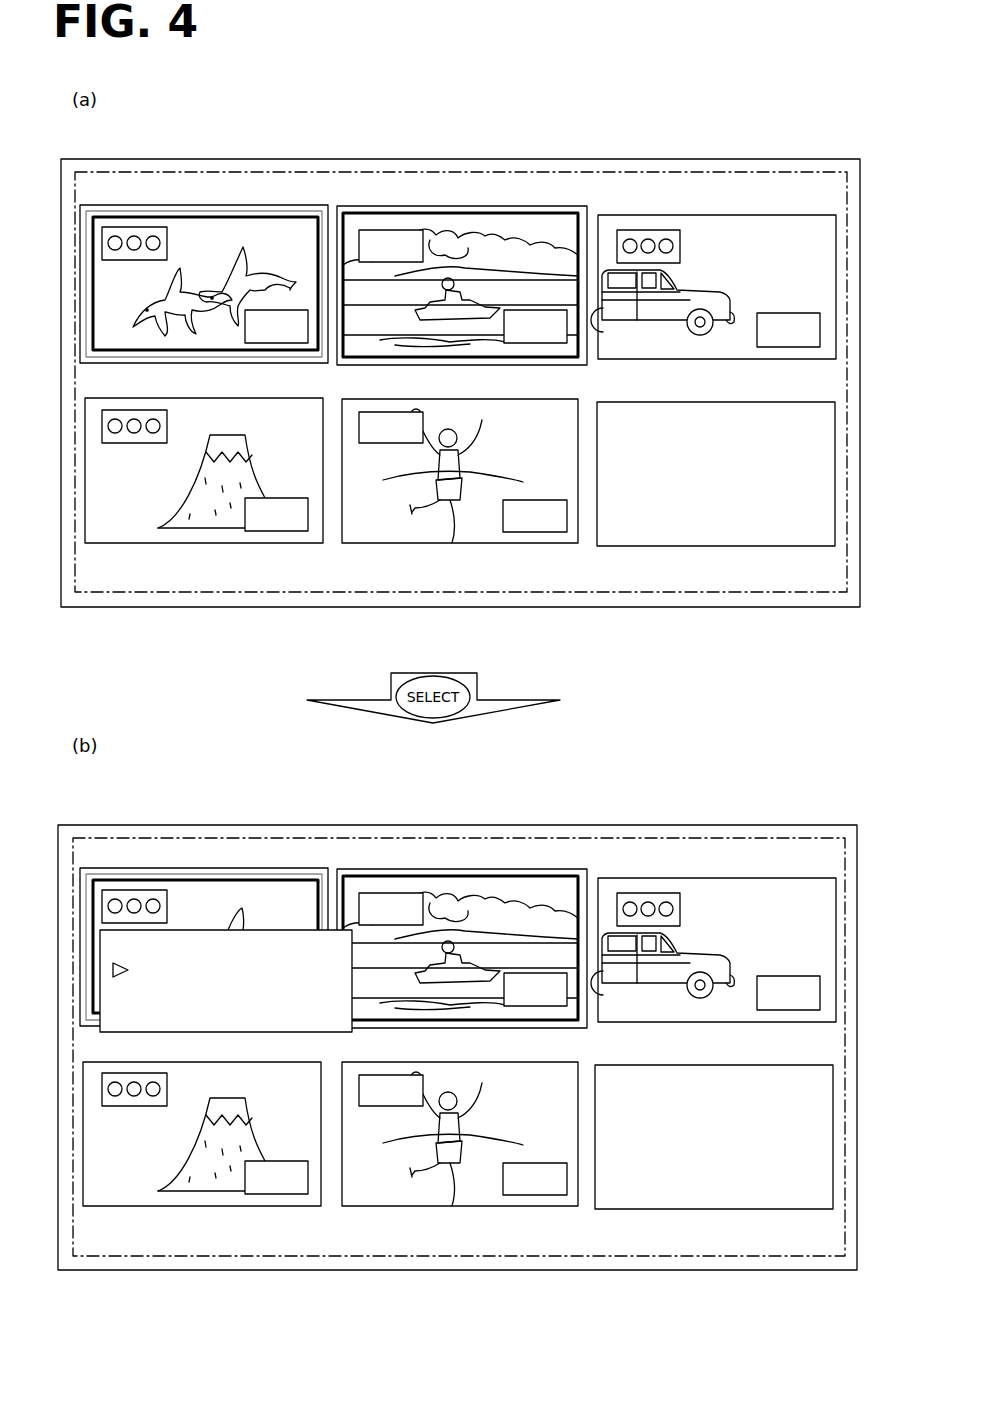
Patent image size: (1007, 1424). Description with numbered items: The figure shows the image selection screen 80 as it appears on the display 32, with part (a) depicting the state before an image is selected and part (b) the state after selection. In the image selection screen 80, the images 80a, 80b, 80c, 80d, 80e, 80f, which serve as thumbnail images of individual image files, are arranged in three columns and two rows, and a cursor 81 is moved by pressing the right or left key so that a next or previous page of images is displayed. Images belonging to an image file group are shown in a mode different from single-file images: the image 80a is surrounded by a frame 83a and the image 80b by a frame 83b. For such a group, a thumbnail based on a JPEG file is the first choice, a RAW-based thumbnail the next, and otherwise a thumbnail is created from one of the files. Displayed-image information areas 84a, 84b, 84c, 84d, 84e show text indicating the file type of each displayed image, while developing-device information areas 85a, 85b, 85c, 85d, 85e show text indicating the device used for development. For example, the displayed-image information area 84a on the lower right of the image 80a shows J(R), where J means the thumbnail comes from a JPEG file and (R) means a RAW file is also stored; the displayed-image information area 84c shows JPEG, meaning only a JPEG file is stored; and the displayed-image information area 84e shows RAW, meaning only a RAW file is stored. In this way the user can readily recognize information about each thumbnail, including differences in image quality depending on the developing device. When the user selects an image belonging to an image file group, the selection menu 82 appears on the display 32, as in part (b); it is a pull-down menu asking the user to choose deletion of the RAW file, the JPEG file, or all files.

The display 32 is at (855, 159).
The image selection screen 80 is at (760, 172).
The image 80a is at (197, 205).
The image 80b is at (455, 206).
The image 80c is at (705, 215).
The image 80d is at (220, 543).
The image 80e is at (455, 543).
The image 80f is at (677, 546).
The cursor 81 is at (250, 217).
The selection menu 82 is at (123, 930).
The frame 83a is at (278, 205).
The frame 83b is at (510, 206).
The displayed-image information area 84a is at (295, 310).
The displayed-image information area 84b is at (548, 310).
The displayed-image information area 84c is at (800, 313).
The displayed-image information area 84d is at (295, 531).
The displayed-image information area 84e is at (542, 532).
The developing-device information area 85a is at (135, 227).
The developing-device information area 85b is at (390, 230).
The developing-device information area 85c is at (640, 230).
The developing-device information area 85d is at (135, 443).
The developing-device information area 85e is at (378, 443).